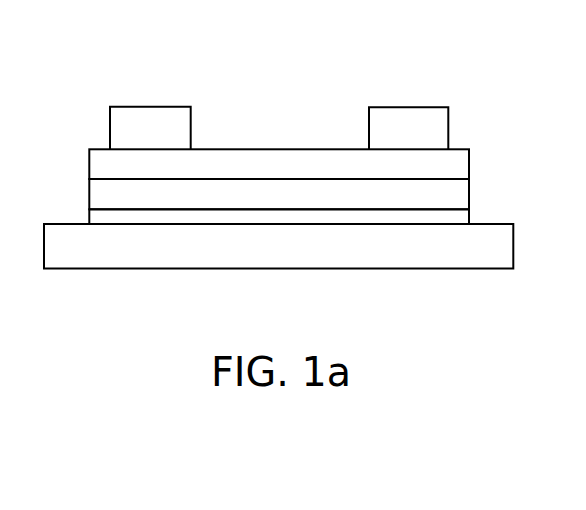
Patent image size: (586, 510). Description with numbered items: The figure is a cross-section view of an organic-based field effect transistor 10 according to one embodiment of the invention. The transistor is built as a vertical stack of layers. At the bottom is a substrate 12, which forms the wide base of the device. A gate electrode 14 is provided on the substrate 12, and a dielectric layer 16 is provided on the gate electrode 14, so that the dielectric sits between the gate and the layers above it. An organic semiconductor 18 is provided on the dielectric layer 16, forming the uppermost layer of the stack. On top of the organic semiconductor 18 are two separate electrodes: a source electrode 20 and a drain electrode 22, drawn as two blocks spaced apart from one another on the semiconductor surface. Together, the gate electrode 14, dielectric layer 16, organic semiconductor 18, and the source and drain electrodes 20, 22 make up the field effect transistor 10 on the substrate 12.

The organic-based field effect transistor 10 is at (427, 49).
The substrate 12 is at (280, 268).
The gate electrode 14 is at (463, 217).
The dielectric layer 16 is at (464, 196).
The organic semiconductor 18 is at (458, 160).
The source electrode 20 is at (145, 107).
The drain electrode 22 is at (405, 107).